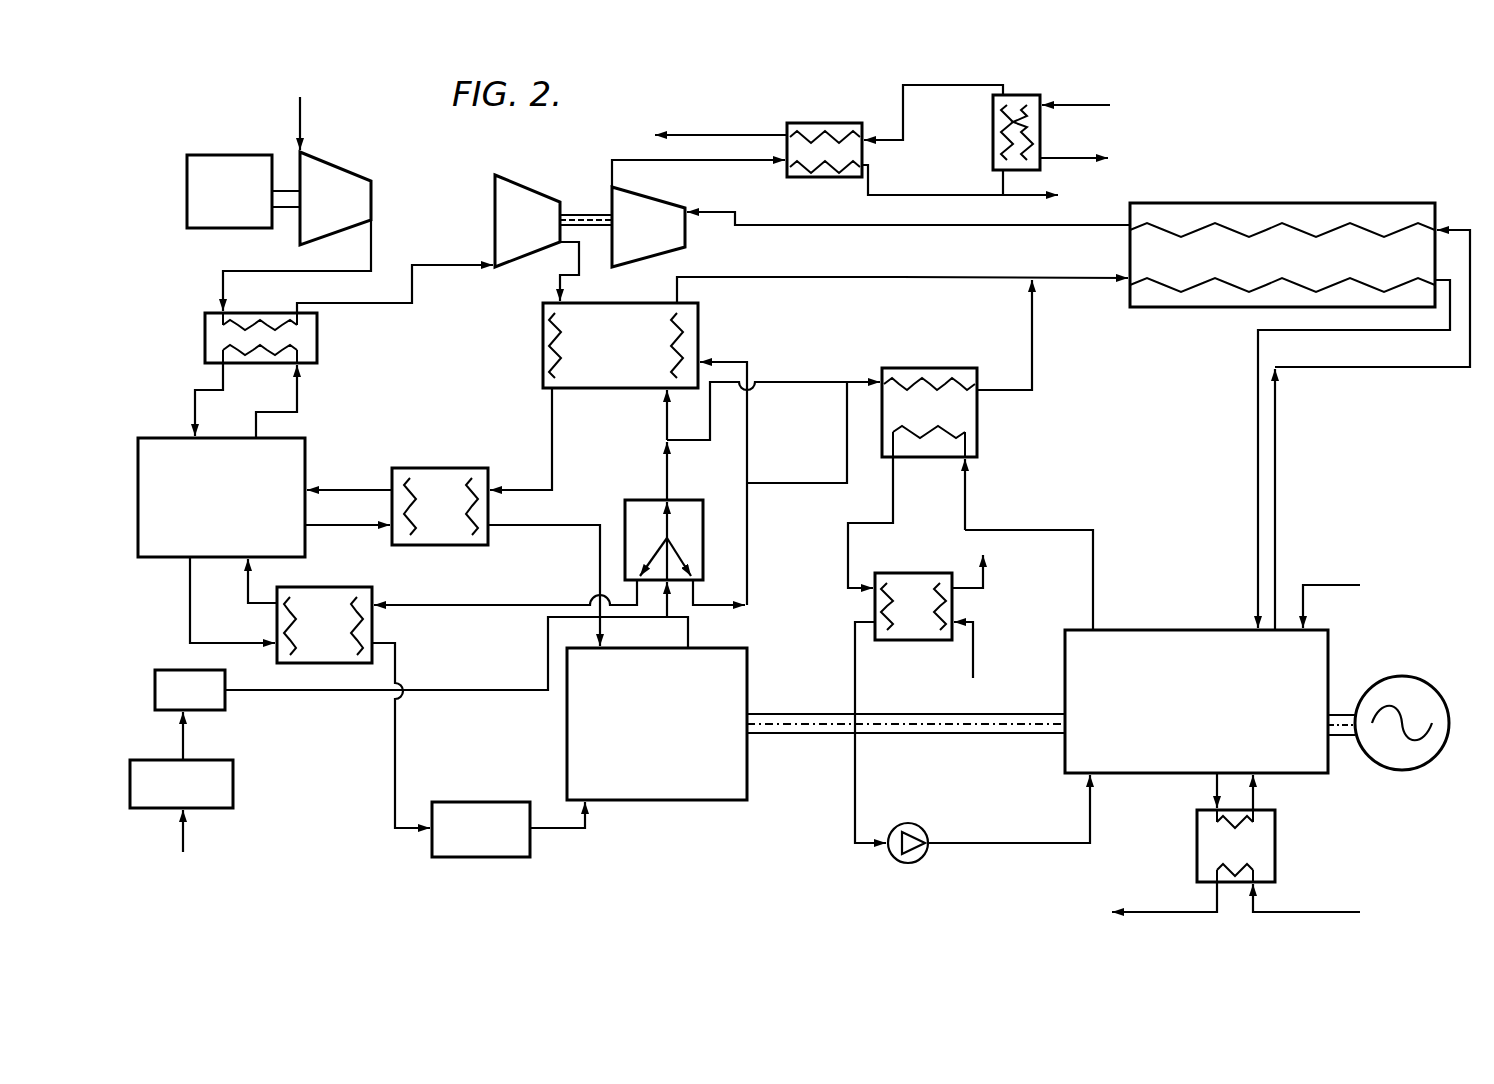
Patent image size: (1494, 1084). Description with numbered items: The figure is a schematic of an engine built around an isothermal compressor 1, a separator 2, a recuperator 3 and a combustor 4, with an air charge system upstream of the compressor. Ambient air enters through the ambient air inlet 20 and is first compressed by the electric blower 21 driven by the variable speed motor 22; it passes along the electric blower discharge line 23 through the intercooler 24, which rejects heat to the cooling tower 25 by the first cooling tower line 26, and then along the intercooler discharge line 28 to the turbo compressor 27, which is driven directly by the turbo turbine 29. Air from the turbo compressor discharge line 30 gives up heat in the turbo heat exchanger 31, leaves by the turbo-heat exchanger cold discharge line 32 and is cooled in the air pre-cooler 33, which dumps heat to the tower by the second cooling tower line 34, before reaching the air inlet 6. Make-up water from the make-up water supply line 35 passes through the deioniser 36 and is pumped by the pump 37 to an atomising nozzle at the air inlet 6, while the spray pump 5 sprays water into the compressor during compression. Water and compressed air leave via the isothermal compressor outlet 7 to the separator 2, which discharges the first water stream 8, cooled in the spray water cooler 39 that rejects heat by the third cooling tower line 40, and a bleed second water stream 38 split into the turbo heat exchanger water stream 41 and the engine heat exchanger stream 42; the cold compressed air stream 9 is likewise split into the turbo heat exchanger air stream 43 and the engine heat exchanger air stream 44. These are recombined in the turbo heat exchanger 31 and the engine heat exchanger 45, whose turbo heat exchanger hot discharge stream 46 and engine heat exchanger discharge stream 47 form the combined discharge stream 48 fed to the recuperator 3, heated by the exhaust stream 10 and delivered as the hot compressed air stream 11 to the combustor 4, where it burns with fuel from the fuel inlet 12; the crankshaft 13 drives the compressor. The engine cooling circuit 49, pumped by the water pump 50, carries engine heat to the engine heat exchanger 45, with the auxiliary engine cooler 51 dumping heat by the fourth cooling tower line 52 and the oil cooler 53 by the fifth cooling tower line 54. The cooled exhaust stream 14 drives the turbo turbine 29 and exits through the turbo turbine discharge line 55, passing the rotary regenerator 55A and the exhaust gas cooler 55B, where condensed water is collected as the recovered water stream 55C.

The isothermal compressor 1 is at (657, 724).
The separator 2 is at (664, 540).
The recuperator 3 is at (1282, 255).
The combustor 4 is at (1257, 701).
The spray pump 5 is at (478, 750).
The air inlet 6 is at (600, 556).
The isothermal compressor outlet 7 is at (667, 624).
The first water stream 8 is at (458, 605).
The cold compressed air stream 9 is at (665, 474).
The exhaust stream 10 is at (1275, 452).
The hot compressed air stream 11 is at (1258, 452).
The fuel inlet 12 is at (1345, 585).
The crankshaft 13 is at (924, 714).
The cooled exhaust stream 14 is at (840, 225).
The ambient air inlet 20 is at (300, 118).
The electric blower 21 is at (335, 198).
The variable speed motor 22 is at (243, 191).
The electric blower discharge line 23 is at (278, 271).
The intercooler 24 is at (317, 340).
The cooling tower 25 is at (221, 497).
The first cooling tower line 26 is at (195, 390).
The turbo compressor 27 is at (553, 221).
The intercooler discharge line 28 is at (365, 303).
The turbo turbine 29 is at (648, 227).
The turbo compressor discharge line 30 is at (560, 284).
The turbo heat exchanger 31 is at (620, 345).
The turbo-heat exchanger cold discharge line 32 is at (552, 432).
The air pre-cooler 33 is at (396, 506).
The second cooling tower line 34 is at (354, 490).
The make-up water supply line 35 is at (185, 838).
The deioniser 36 is at (181, 760).
The pump 37 is at (421, 663).
The second water stream 38 is at (747, 598).
The spray water cooler 39 is at (281, 610).
The third cooling tower line 40 is at (248, 598).
The turbo heat exchanger water stream 41 is at (747, 414).
The engine heat exchanger stream 42 is at (847, 462).
The turbo heat exchanger air stream 43 is at (665, 418).
The engine heat exchanger air stream 44 is at (690, 440).
The engine heat exchanger 45 is at (929, 412).
The turbo heat exchanger hot discharge stream 46 is at (776, 277).
The engine heat exchanger discharge stream 47 is at (1032, 352).
The combined discharge stream 48 is at (1083, 278).
The engine cooling circuit 49 is at (965, 497).
The water pump 50 is at (908, 863).
The auxiliary engine cooler 51 is at (910, 567).
The fourth cooling tower line 52 is at (983, 590).
The oil cooler 53 is at (1278, 842).
The fifth cooling tower line 54 is at (1157, 912).
The turbo turbine discharge line 55 is at (672, 160).
The rotary regenerator 55A is at (794, 123).
The exhaust gas cooler 55B is at (993, 125).
The recovered water stream 55C is at (1015, 195).